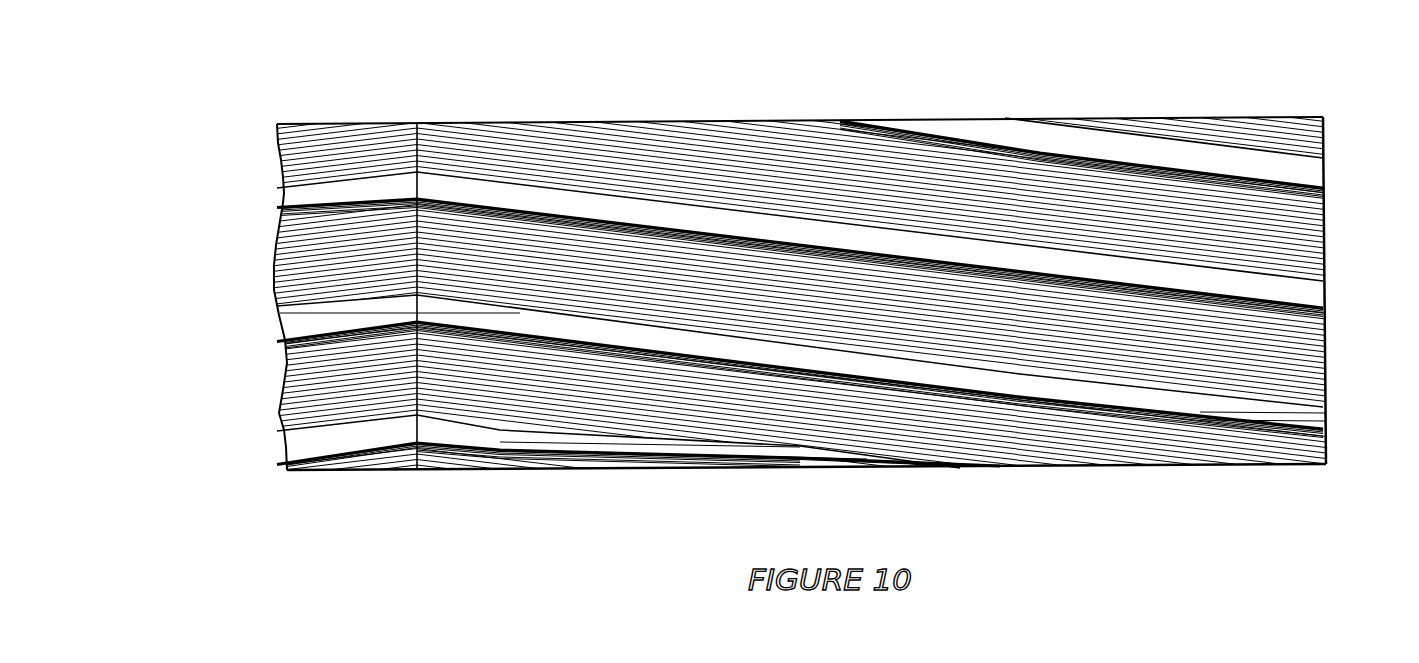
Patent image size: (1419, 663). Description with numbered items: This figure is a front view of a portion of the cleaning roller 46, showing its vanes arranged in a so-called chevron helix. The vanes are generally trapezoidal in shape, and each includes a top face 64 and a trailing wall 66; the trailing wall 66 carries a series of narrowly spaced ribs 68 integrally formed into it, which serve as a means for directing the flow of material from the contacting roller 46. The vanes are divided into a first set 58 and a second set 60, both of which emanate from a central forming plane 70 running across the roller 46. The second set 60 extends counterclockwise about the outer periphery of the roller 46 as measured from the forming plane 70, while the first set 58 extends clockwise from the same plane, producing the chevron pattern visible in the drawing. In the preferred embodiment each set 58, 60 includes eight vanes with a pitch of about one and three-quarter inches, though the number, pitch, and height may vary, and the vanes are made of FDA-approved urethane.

The cleaning roller 46 is at (804, 290).
The first set of vanes 58 is at (1292, 264).
The second set of vanes 60 is at (290, 160).
The top face 64 is at (297, 202).
The trailing wall 66 is at (1328, 352).
The ribs 68 is at (1182, 358).
The central forming plane 70 is at (417, 152).